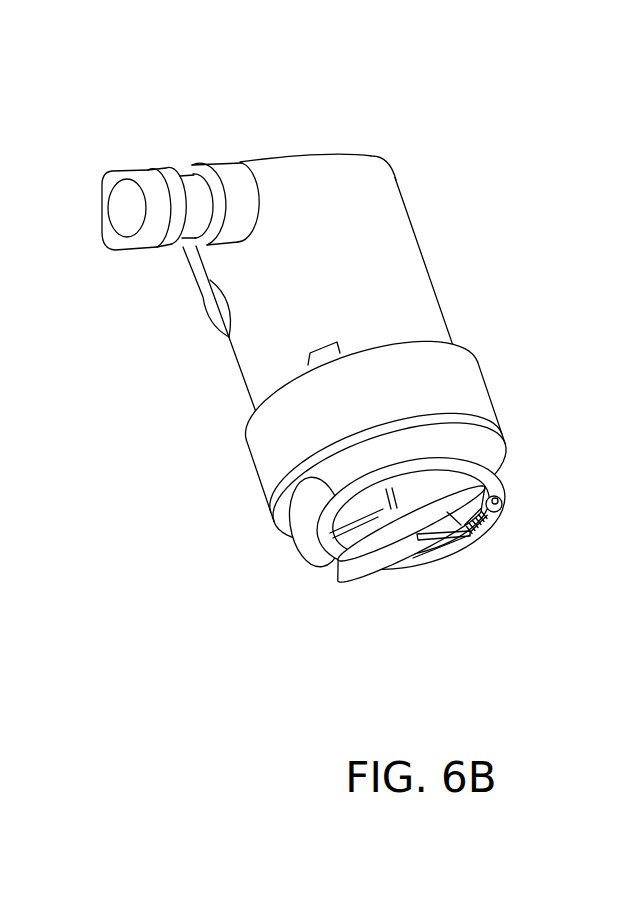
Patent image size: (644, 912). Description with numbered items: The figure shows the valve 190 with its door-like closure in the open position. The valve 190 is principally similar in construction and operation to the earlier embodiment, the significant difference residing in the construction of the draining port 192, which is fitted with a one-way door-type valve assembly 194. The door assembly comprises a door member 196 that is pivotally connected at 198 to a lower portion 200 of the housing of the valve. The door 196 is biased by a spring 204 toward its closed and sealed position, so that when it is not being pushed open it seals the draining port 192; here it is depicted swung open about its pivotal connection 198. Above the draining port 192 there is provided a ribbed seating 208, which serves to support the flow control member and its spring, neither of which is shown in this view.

The valve 190 is at (297, 117).
The draining port 192 is at (337, 566).
The one-way door-type valve assembly 194 is at (405, 595).
The door member 196 is at (473, 533).
The pivotal connection 198 is at (501, 497).
The lower portion of the housing 200 is at (473, 448).
The spring 204 is at (462, 532).
The ribbed seating 208 is at (305, 483).